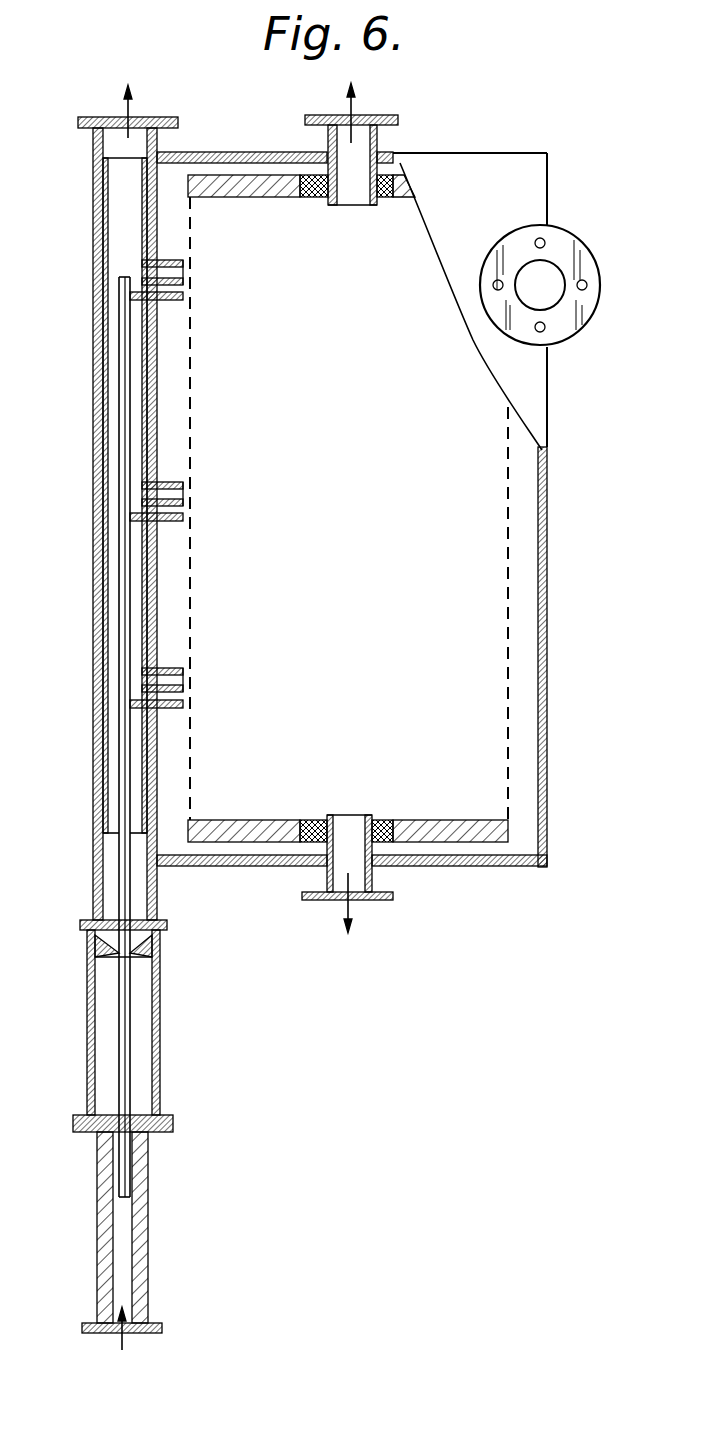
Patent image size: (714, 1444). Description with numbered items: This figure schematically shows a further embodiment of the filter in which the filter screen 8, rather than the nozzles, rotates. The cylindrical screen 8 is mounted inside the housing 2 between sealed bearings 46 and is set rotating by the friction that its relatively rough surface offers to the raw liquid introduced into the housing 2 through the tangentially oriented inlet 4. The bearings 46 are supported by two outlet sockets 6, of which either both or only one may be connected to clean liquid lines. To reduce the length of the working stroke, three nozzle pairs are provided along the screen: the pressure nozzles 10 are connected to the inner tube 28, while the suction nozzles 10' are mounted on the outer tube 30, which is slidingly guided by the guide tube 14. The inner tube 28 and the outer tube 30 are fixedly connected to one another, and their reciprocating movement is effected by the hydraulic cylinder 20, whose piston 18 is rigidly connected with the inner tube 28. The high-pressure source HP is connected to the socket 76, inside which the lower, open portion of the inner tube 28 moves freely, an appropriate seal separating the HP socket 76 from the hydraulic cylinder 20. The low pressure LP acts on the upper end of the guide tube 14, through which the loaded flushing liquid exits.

The housing 2 is at (546, 577).
The tangentially oriented inlet 4 is at (552, 277).
The outlet socket 6 is at (358, 143).
The filter screen 8 is at (510, 687).
The pressure nozzle 10 is at (114, 521).
The suction nozzle 10' is at (114, 456).
The guide tube 14 is at (154, 898).
The piston 18 is at (110, 957).
The hydraulic cylinder 20 is at (160, 1055).
The inner tube 28 is at (120, 1055).
The outer tube 30 is at (97, 802).
The sealed bearing 46 is at (318, 182).
The socket 76 is at (148, 1225).